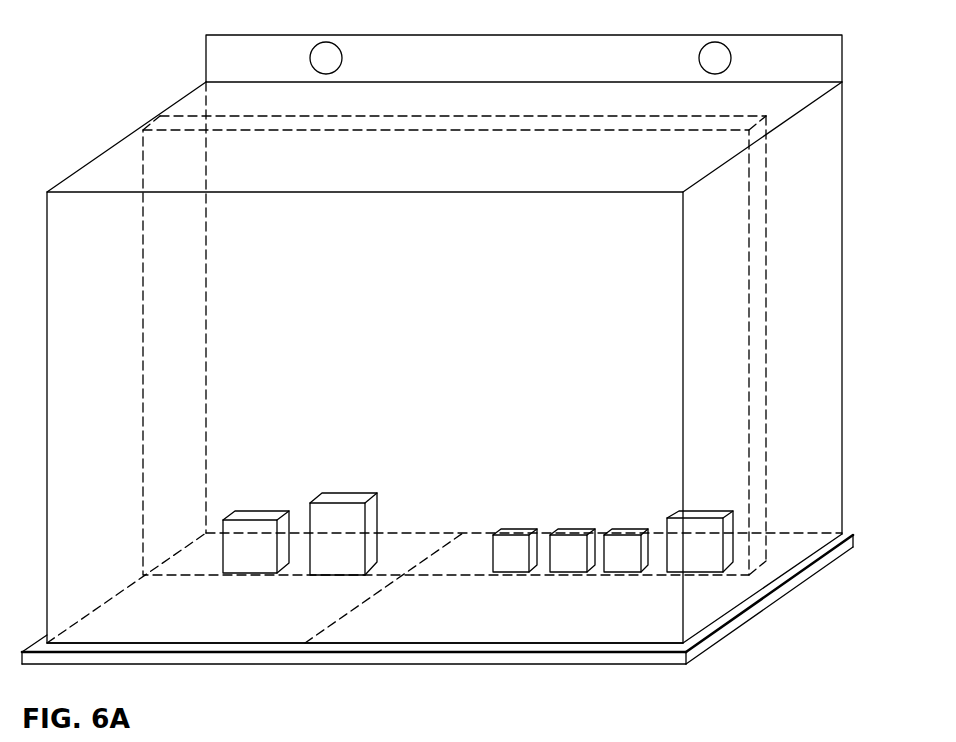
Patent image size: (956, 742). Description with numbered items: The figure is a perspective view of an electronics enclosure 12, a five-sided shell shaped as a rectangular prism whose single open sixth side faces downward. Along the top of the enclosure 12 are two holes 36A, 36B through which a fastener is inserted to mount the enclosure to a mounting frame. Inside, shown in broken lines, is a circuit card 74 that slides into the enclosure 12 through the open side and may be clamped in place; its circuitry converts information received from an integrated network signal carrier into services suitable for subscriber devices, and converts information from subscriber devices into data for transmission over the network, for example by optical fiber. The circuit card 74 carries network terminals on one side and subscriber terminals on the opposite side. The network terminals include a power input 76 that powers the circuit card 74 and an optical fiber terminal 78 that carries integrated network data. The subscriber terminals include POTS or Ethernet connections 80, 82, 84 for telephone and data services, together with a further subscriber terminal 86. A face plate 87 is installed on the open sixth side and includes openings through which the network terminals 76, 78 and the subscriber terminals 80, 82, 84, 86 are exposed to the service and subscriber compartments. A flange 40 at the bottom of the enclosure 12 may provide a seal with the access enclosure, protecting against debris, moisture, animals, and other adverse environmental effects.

The electronics enclosure 12 is at (99, 145).
The hole 36A is at (315, 46).
The hole 36B is at (704, 47).
The circuit card 74 is at (240, 213).
The power input 76 is at (250, 565).
The optical fiber terminal 78 is at (333, 565).
The POTS or Ethernet connection 80 is at (512, 567).
The POTS or Ethernet connection 82 is at (570, 567).
The POTS or Ethernet connection 84 is at (623, 567).
The subscriber terminal 86 is at (695, 567).
The face plate 87 is at (478, 633).
The flange 40 is at (710, 633).